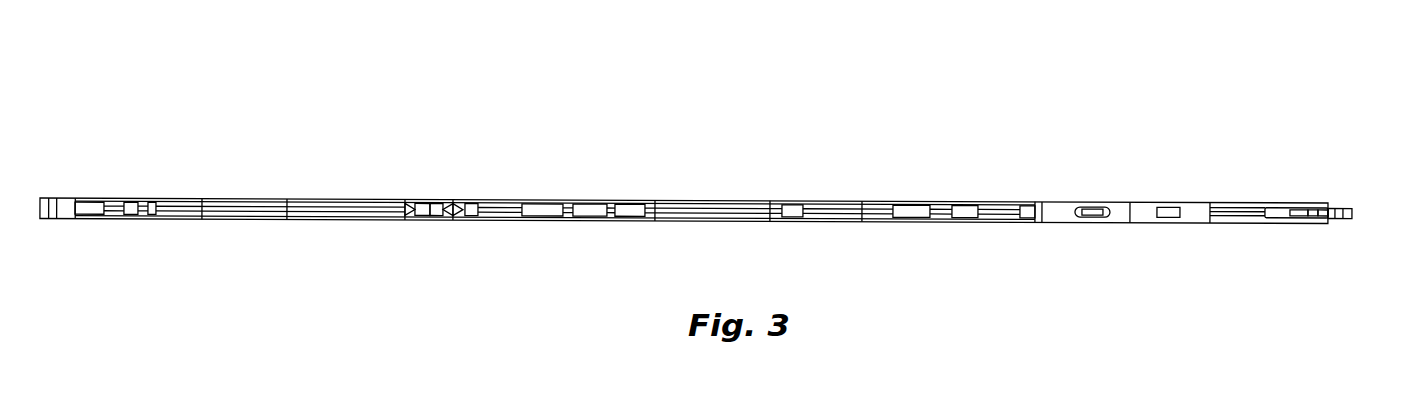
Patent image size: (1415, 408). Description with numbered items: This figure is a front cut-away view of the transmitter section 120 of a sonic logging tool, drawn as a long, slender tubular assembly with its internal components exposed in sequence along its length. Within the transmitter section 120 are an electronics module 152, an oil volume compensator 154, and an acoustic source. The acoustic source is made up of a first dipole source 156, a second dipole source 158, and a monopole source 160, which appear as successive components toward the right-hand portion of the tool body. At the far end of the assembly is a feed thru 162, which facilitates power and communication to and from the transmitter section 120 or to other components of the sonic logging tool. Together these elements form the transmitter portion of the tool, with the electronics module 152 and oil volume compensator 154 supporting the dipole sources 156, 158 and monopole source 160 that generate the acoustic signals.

The transmitter section 120 is at (626, 94).
The electronics module 152 is at (400, 200).
The oil volume compensator 154 is at (965, 205).
The first dipole source 156 is at (1092, 205).
The second dipole source 158 is at (1167, 205).
The monopole source 160 is at (1272, 203).
The feed thru 162 is at (1340, 204).